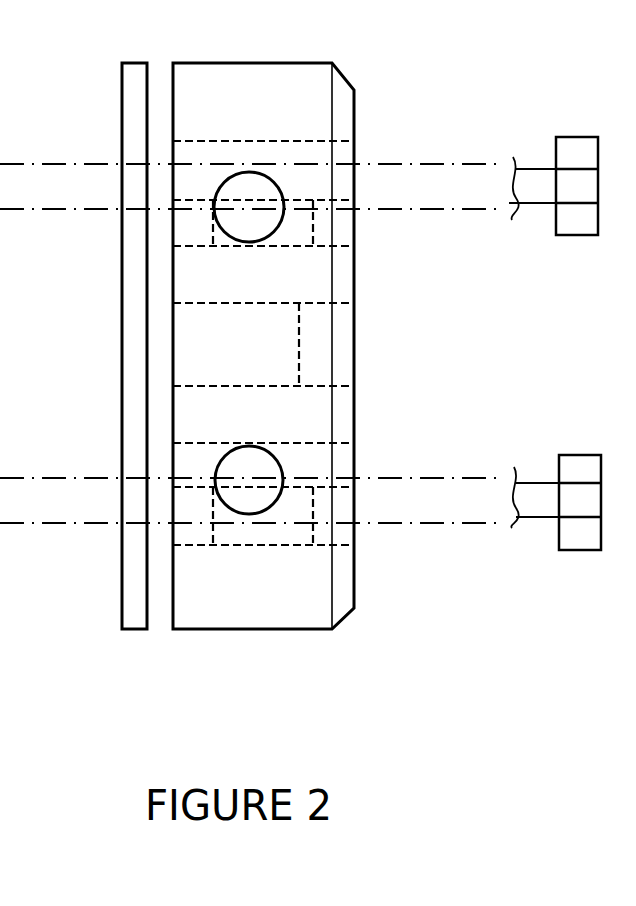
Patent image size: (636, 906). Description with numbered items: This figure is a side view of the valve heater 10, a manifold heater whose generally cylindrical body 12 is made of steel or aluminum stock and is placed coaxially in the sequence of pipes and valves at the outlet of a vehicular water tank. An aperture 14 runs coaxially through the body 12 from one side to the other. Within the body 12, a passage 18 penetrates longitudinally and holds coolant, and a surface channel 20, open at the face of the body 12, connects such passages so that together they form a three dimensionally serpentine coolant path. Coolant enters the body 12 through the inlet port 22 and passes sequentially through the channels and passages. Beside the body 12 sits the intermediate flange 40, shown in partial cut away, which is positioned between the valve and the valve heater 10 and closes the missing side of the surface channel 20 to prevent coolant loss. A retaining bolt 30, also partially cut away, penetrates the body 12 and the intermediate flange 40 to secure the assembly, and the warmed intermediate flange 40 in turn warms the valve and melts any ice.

The valve heater 10 is at (466, 653).
The body 12 is at (295, 630).
The aperture 14 is at (0, 150).
The passage 18 is at (292, 141).
The surface channel 20 is at (315, 545).
The inlet port 22 is at (267, 443).
The bolt 30 is at (523, 523).
The intermediate flange 40 is at (135, 630).